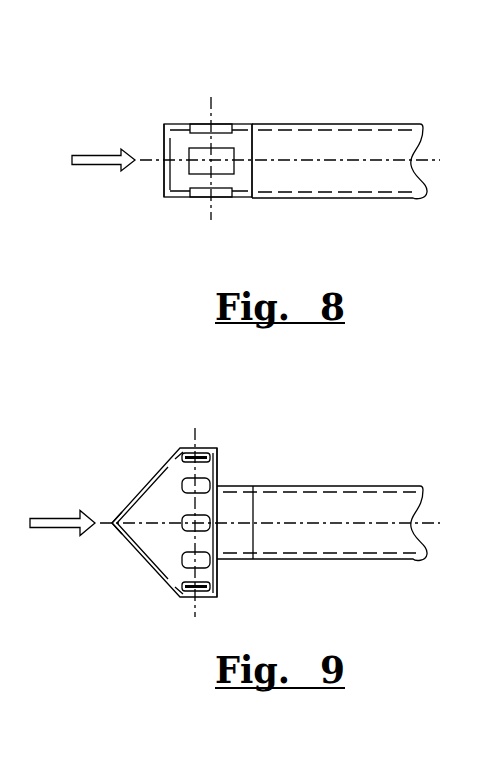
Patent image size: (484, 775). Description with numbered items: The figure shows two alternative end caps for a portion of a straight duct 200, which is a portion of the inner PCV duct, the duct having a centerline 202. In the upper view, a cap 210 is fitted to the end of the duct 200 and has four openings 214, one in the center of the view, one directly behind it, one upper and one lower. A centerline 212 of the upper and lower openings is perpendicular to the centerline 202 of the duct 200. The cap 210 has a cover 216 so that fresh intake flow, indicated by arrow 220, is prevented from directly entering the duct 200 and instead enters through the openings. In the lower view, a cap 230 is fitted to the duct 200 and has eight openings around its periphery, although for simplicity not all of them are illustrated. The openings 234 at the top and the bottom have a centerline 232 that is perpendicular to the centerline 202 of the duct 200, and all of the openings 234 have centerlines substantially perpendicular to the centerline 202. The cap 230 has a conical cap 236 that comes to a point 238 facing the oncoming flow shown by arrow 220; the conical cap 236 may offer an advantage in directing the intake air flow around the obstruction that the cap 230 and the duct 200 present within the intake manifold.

In FIG. 8, the straight duct 200 is at (393, 124).
In FIG. 9, the straight duct 200 is at (397, 486).
In FIG. 8, the centerline of duct 202 is at (325, 160).
In FIG. 9, the centerline of duct 202 is at (323, 523).
In FIG. 8, the cap 210 is at (180, 183).
In FIG. 8, the centerline of upper and lower openings 212 is at (216, 104).
In FIG. 8, the openings 214 is at (203, 124).
In FIG. 8, the cover 216 is at (164, 182).
In FIG. 8, the arrow 220 is at (117, 153).
In FIG. 9, the arrow 220 is at (77, 513).
In FIG. 9, the cap 230 is at (205, 470).
In FIG. 9, the centerline of openings 232 is at (200, 432).
In FIG. 9, the openings 234 is at (183, 488).
In FIG. 9, the conical cap 236 is at (142, 558).
In FIG. 9, the point 238 is at (112, 524).